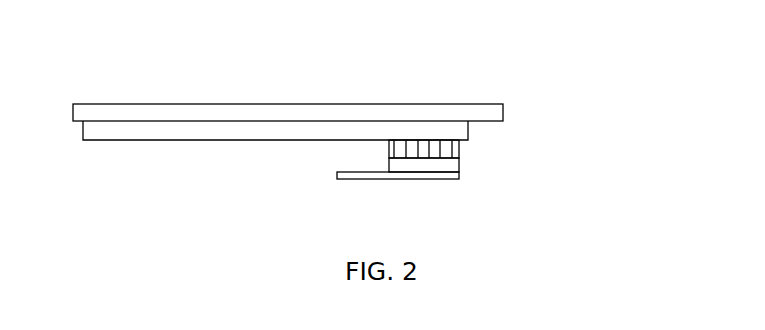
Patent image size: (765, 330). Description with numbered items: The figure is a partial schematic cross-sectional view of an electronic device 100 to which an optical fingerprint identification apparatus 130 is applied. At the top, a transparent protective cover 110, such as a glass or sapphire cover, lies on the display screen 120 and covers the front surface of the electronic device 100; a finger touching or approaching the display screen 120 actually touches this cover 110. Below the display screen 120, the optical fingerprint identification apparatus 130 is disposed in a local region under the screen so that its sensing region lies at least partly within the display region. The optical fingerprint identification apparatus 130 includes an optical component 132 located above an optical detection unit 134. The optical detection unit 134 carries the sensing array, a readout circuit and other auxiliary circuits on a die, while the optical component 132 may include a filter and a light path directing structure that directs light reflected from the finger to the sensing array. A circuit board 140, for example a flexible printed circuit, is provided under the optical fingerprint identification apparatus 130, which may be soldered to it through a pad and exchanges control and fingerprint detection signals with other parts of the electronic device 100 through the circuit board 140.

The electronic device 100 is at (312, 58).
The transparent protective cover 110 is at (479, 103).
The display screen 120 is at (168, 141).
The optical fingerprint identification apparatus 130 is at (507, 169).
The optical component 132 is at (460, 149).
The optical detection unit 134 is at (460, 166).
The circuit board 140 is at (338, 176).